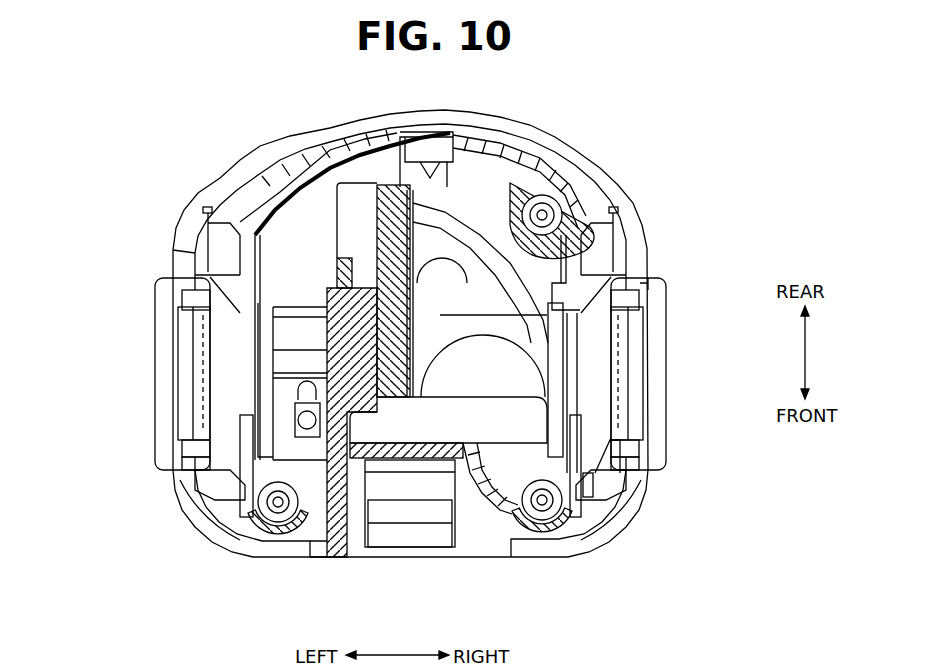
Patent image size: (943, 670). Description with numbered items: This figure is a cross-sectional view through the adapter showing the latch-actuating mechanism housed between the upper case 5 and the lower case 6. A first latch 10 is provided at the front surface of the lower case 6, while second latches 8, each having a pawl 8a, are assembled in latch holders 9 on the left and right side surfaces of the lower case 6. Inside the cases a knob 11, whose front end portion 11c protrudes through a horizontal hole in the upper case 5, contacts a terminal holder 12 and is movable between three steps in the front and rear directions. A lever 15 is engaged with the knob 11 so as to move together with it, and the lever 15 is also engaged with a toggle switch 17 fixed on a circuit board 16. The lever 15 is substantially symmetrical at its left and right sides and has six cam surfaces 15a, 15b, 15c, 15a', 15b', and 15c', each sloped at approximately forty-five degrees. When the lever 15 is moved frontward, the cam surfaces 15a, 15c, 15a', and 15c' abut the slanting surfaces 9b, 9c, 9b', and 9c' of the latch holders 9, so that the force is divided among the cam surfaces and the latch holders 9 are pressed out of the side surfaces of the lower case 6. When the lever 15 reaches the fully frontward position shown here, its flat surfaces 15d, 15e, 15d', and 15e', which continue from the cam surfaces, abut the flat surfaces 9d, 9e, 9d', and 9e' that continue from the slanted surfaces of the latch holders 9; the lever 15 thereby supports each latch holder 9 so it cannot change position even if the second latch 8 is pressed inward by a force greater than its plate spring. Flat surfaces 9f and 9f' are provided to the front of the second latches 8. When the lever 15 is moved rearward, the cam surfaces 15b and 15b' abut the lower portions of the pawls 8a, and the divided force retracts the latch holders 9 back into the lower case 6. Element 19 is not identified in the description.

The upper case 5 is at (540, 196).
The lower case 6 is at (603, 176).
The second latch 8 is at (178, 322).
The pawl 8a is at (178, 396).
The latch holder 9 is at (157, 375).
The slanting surface 9b is at (152, 464).
The slanting surface 9b' is at (663, 467).
The slanting surface 9c is at (144, 263).
The slanting surface 9c' is at (639, 259).
The flat surface 9d is at (223, 538).
The flat surface 9d' is at (583, 550).
The flat surface 9e is at (188, 333).
The flat surface 9e' is at (699, 290).
The flat surface 9f is at (180, 512).
The flat surface 9f' is at (633, 521).
The first latch 10 is at (406, 549).
The knob 11 is at (325, 522).
The front end portion 11c is at (333, 558).
The terminal holder 12 is at (438, 150).
The lever 15 is at (512, 520).
The cam surface 15a is at (218, 504).
The cam surface 15a' is at (594, 517).
The cam surface 15b is at (145, 439).
The cam surface 15b' is at (670, 442).
The cam surface 15c is at (203, 381).
The cam surface 15c' is at (659, 400).
The flat surface 15d is at (171, 490).
The flat surface 15d' is at (647, 494).
The flat surface 15e is at (145, 294).
The flat surface 15e' is at (680, 280).
The circuit board 16 is at (495, 520).
The toggle switch 17 is at (270, 533).
The support plate 19 is at (505, 520).